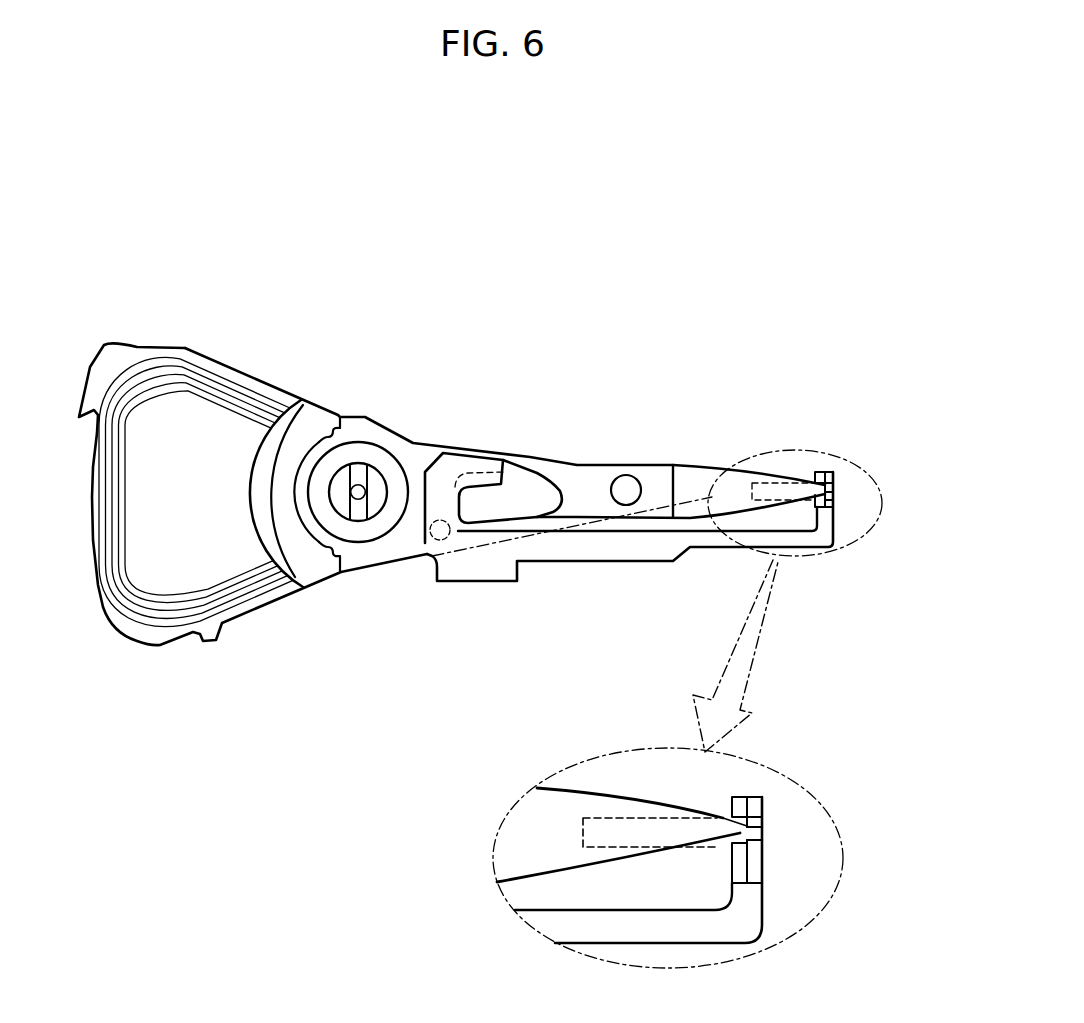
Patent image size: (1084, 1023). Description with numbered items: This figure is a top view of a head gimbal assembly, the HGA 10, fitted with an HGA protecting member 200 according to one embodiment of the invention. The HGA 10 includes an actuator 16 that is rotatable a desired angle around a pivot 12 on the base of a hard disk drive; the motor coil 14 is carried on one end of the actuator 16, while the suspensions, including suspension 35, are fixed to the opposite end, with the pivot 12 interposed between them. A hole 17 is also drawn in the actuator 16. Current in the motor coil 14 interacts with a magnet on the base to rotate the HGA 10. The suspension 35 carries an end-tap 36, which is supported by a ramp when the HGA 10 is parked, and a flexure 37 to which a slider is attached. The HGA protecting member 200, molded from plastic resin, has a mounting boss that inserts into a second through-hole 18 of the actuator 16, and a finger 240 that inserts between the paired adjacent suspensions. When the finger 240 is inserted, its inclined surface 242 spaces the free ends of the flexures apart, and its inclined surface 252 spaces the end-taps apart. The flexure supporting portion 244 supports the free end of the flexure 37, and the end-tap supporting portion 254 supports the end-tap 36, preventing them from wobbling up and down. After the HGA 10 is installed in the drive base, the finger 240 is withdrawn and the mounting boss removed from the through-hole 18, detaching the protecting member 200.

The HGA 10 is at (290, 368).
The pivot 12 is at (352, 498).
The motor coil 14 is at (190, 387).
The actuator 16 is at (522, 457).
The hole 17 is at (630, 485).
The second through-hole 18 is at (438, 540).
The suspension 35 is at (693, 482).
The end-tap 36 is at (757, 832).
The flexure 37 is at (628, 833).
The HGA protecting member 200 is at (494, 588).
The finger 240 is at (843, 487).
The inclined surface 242 is at (737, 800).
The flexure supporting portion 244 is at (737, 847).
The inclined surface 252 is at (757, 806).
The end-tap supporting portion 254 is at (760, 855).